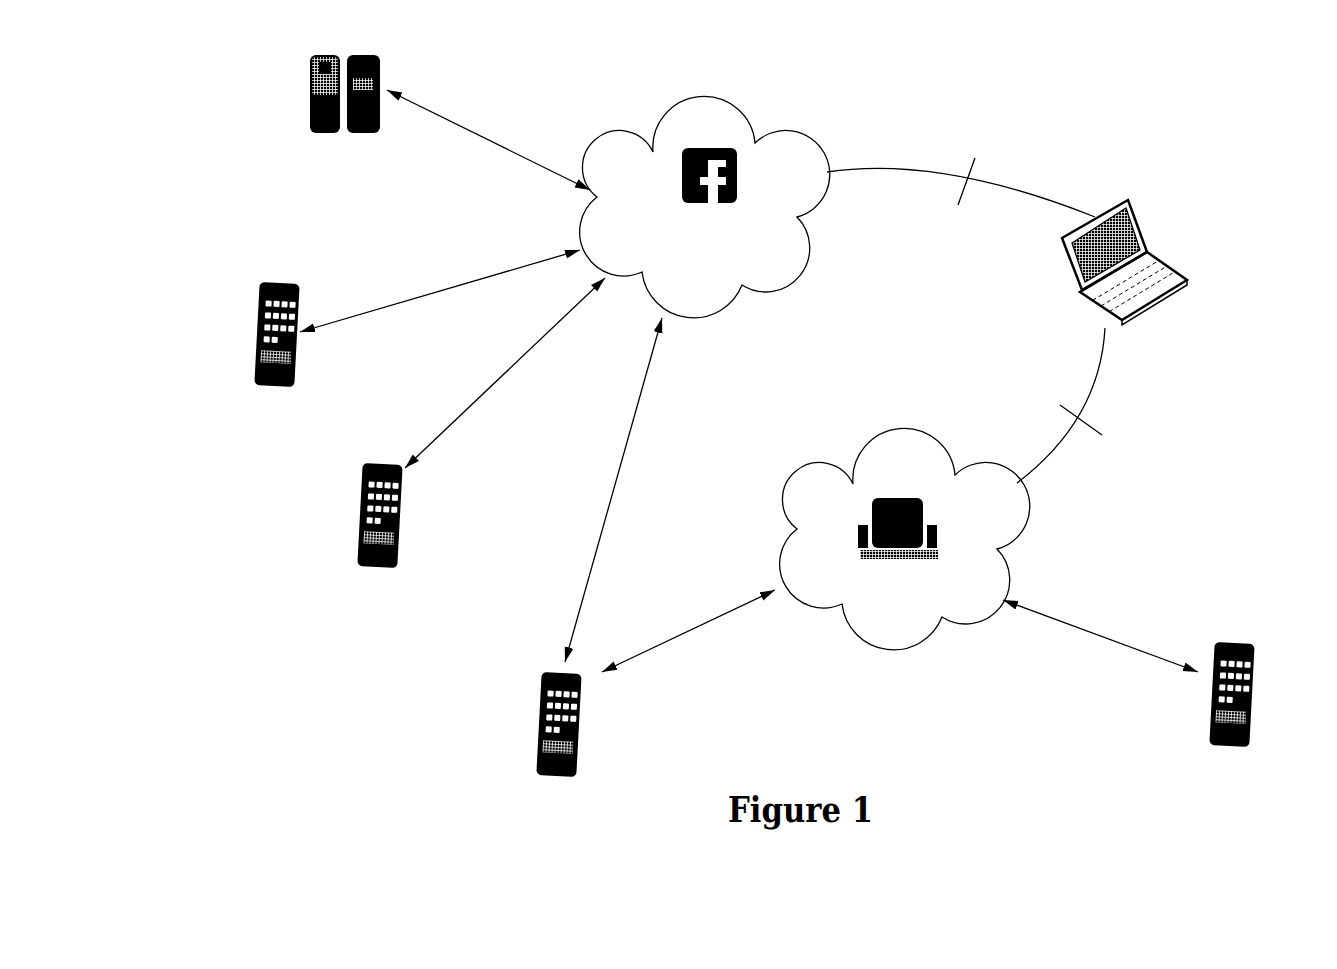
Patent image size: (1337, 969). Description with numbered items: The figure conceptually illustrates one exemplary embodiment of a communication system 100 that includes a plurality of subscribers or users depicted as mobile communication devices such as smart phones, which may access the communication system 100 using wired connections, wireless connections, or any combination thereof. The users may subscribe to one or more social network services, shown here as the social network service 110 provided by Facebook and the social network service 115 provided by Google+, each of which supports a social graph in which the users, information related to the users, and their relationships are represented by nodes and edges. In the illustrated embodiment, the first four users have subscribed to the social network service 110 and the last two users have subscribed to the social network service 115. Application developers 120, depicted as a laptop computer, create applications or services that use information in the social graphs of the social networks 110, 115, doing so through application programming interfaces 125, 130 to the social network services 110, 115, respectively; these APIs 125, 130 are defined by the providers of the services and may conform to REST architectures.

The communication system 100 is at (1212, 117).
The social network service 110 is at (723, 248).
The social network service 115 is at (913, 593).
The application developers 120 is at (1188, 278).
The application programming interface 125 is at (967, 170).
The application programming interface 130 is at (1087, 420).